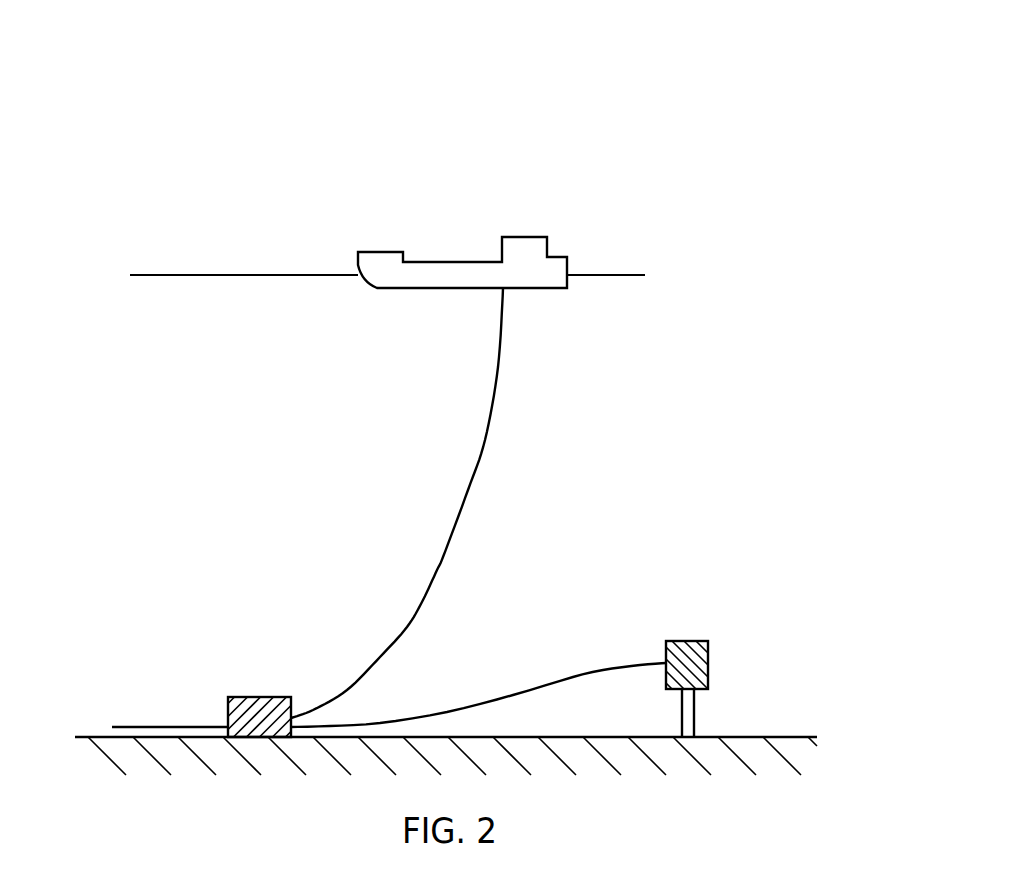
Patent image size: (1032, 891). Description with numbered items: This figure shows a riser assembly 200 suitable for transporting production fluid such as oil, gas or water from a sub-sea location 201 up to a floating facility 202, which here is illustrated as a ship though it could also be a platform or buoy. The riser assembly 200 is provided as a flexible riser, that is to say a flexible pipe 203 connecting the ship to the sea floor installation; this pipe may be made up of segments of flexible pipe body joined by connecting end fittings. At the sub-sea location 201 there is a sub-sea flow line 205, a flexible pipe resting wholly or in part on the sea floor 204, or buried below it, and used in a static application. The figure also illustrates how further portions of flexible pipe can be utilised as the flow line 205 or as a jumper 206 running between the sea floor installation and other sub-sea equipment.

The riser assembly 200 is at (519, 368).
The sub-sea location 201 is at (260, 697).
The floating facility 202 is at (382, 252).
The flexible pipe 203 is at (443, 557).
The sea floor 204 is at (757, 737).
The flow line 205 is at (173, 727).
The jumper 206 is at (603, 670).